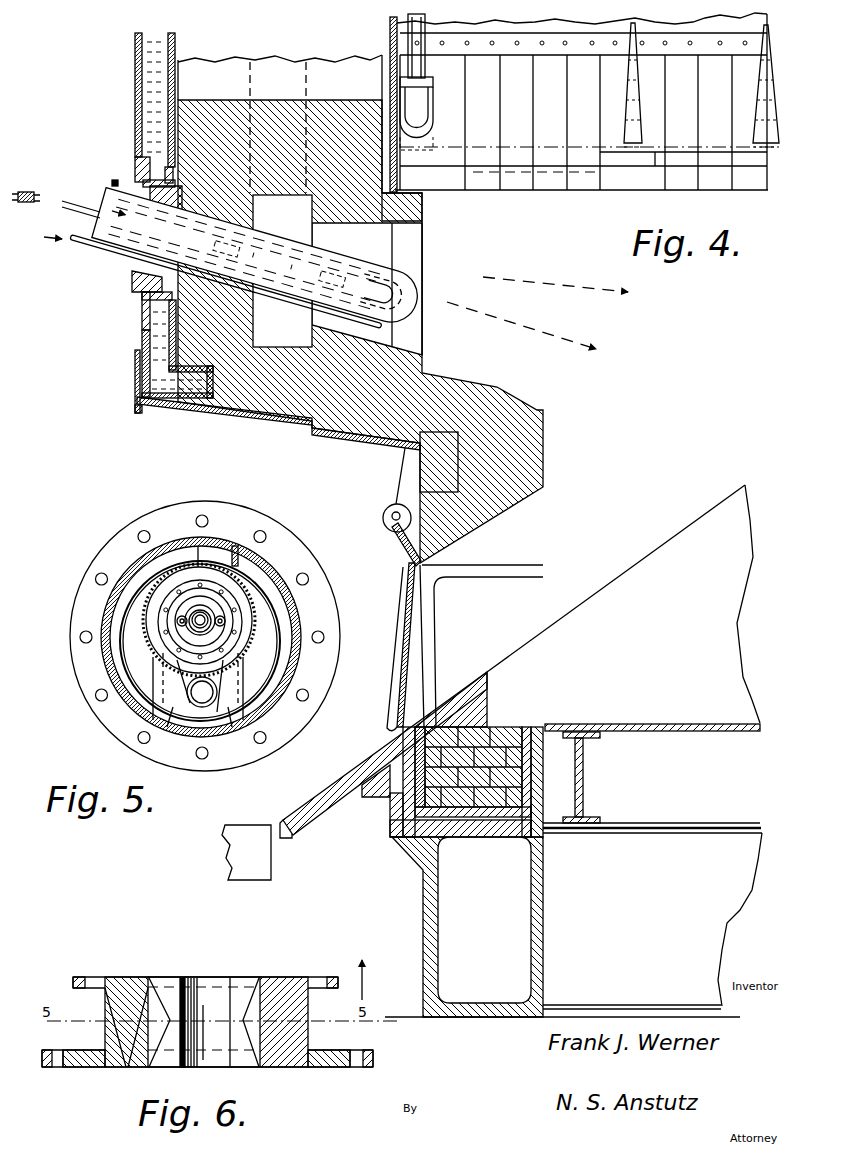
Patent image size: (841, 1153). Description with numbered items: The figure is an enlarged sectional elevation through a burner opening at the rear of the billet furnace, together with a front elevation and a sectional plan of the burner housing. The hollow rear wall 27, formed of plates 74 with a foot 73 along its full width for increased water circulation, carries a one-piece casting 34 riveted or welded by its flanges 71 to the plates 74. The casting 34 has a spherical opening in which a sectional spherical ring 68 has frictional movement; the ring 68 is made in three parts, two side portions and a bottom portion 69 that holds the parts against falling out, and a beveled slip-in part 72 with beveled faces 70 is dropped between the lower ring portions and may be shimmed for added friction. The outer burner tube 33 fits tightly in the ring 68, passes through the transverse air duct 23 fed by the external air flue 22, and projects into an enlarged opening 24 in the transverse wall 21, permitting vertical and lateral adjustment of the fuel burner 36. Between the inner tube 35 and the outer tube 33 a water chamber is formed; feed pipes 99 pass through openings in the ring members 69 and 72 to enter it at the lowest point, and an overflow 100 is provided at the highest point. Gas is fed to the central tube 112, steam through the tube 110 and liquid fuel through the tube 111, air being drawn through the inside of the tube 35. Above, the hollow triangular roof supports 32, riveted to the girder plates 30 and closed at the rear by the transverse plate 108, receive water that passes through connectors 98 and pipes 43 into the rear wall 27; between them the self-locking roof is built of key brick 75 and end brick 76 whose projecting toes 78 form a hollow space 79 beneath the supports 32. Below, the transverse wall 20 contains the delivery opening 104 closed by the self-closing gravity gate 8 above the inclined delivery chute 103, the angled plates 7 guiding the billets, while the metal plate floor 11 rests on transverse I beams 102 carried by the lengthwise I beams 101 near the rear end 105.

In FIG. 4, the plates 7 is at (636, 570).
In FIG. 4, the self-closing gravity gate 8 is at (402, 651).
In FIG. 4, the metal plate floor 11 is at (632, 724).
In FIG. 4, the transverse wall 20 is at (530, 411).
In FIG. 4, the transverse wall 21 is at (424, 210).
In FIG. 4, the external air flue 22 is at (280, 70).
In FIG. 4, the transverse air duct 23 is at (288, 196).
In FIG. 4, the enlarged openings 24 is at (383, 243).
In FIG. 4, the hollow rear wall 27 is at (160, 95).
In FIG. 4, the girder plates 30 is at (571, 22).
In FIG. 4, the hollow triangular roof supports 32 is at (505, 36).
In FIG. 4, the burner tubes 33 is at (340, 253).
In FIG. 5, the burner tubes 33 is at (233, 673).
In FIG. 4, the casting 34 is at (135, 167).
In FIG. 5, the casting 34 is at (267, 567).
In FIG. 6, the casting 34 is at (103, 977).
In FIG. 4, the inner tubes 35 is at (251, 233).
In FIG. 5, the inner tubes 35 is at (187, 657).
In FIG. 4, the fuel burners 36 is at (406, 283).
In FIG. 5, the fuel burners 36 is at (215, 632).
In FIG. 4, the pipes 43 is at (426, 21).
In FIG. 4, the spherical rings 68 is at (182, 196).
In FIG. 5, the spherical rings 68 is at (137, 572).
In FIG. 6, the spherical rings 68 is at (138, 978).
In FIG. 4, the bottom portion 69 is at (139, 295).
In FIG. 5, the bottom portion 69 is at (173, 707).
In FIG. 6, the bottom portion 69 is at (170, 983).
In FIG. 6, the beveled faces 70 is at (243, 1028).
In FIG. 5, the flanges 71 is at (323, 603).
In FIG. 6, the flanges 71 is at (80, 978).
In FIG. 4, the slip-in part 72 is at (142, 270).
In FIG. 5, the slip-in part 72 is at (217, 707).
In FIG. 6, the slip-in part 72 is at (222, 973).
In FIG. 4, the foot 73 is at (185, 385).
In FIG. 4, the plates 74 is at (135, 58).
In FIG. 4, the key brick 75 is at (517, 190).
In FIG. 4, the end brick 76 is at (462, 108).
In FIG. 4, the projecting toes 78 is at (621, 181).
In FIG. 4, the hollow space 79 is at (655, 158).
In FIG. 4, the connectors 98 is at (426, 105).
In FIG. 4, the feed pipes 99 is at (72, 244).
In FIG. 5, the feed pipes 99 is at (202, 690).
In FIG. 4, the overflow 100 is at (113, 182).
In FIG. 4, the I beams 101 is at (721, 927).
In FIG. 4, the transverse I beams 102 is at (584, 786).
In FIG. 4, the delivery chute 103 is at (448, 700).
In FIG. 4, the delivery opening 104 is at (532, 541).
In FIG. 4, the rear end 105 is at (503, 728).
In FIG. 4, the transverse plate 108 is at (390, 25).
In FIG. 5, the steam tube 110 is at (187, 622).
In FIG. 5, the liquid fuel tube 111 is at (237, 615).
In FIG. 4, the central gas tube 112 is at (63, 204).
In FIG. 5, the central gas tube 112 is at (173, 618).